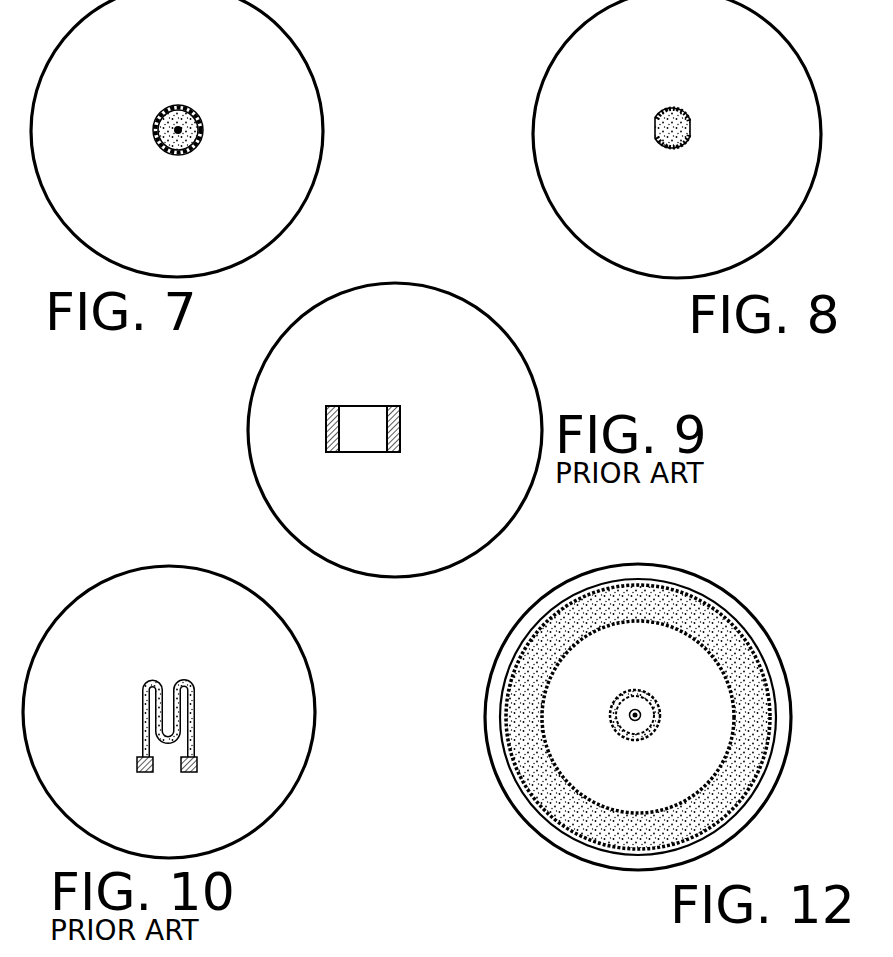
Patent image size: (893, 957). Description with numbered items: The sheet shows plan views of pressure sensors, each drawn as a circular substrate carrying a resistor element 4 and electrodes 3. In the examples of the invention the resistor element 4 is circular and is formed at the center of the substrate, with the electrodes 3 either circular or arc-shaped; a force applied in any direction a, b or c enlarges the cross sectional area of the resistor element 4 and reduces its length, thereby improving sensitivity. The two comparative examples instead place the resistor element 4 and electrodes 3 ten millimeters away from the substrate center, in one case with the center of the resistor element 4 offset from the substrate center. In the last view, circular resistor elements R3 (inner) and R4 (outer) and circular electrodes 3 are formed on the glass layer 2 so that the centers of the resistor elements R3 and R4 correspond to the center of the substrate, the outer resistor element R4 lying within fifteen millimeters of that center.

In FIG. 7, the glass layer 2 is at (297, 111).
In FIG. 8, the glass layer 2 is at (787, 104).
In FIG. 9, the glass layer 2 is at (485, 373).
In FIG. 10, the glass layer 2 is at (272, 697).
In FIG. 12, the glass layer 2 is at (534, 621).
In FIG. 7, the electrodes 3 is at (156, 134).
In FIG. 8, the electrodes 3 is at (656, 116).
In FIG. 9, the electrodes 3 is at (390, 405).
In FIG. 10, the electrodes 3 is at (152, 772).
In FIG. 12, the electrodes 3 is at (650, 613).
In FIG. 7, the resistor element 4 is at (180, 156).
In FIG. 8, the resistor element 4 is at (684, 148).
In FIG. 9, the resistor element 4 is at (362, 440).
In FIG. 10, the resistor element 4 is at (187, 676).
In FIG. 12, the resistor element 4 is at (812, 610).
In FIG. 7, the force direction a is at (205, 135).
In FIG. 7, the force direction b is at (198, 115).
In FIG. 7, the force direction c is at (178, 104).
In FIG. 12, the inner resistor element R3 is at (660, 717).
In FIG. 12, the outer resistor element R4 is at (720, 643).